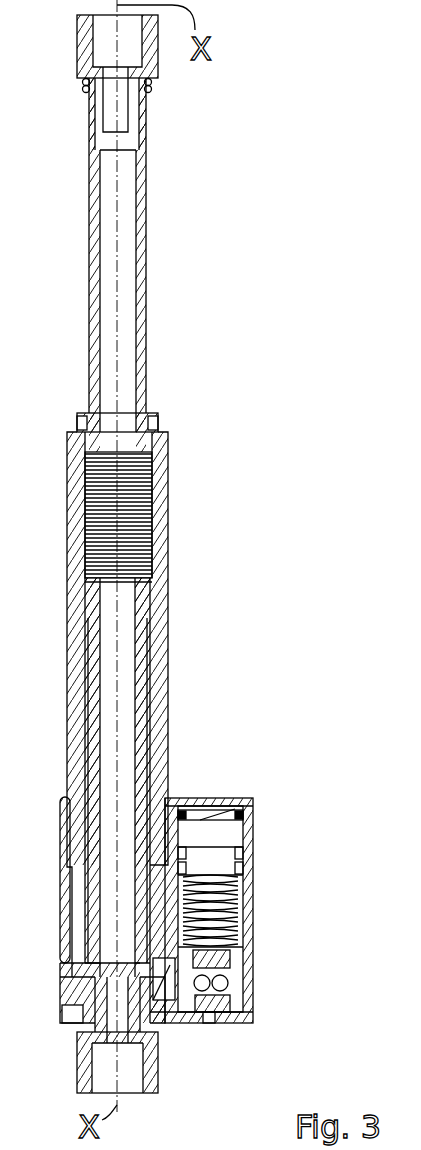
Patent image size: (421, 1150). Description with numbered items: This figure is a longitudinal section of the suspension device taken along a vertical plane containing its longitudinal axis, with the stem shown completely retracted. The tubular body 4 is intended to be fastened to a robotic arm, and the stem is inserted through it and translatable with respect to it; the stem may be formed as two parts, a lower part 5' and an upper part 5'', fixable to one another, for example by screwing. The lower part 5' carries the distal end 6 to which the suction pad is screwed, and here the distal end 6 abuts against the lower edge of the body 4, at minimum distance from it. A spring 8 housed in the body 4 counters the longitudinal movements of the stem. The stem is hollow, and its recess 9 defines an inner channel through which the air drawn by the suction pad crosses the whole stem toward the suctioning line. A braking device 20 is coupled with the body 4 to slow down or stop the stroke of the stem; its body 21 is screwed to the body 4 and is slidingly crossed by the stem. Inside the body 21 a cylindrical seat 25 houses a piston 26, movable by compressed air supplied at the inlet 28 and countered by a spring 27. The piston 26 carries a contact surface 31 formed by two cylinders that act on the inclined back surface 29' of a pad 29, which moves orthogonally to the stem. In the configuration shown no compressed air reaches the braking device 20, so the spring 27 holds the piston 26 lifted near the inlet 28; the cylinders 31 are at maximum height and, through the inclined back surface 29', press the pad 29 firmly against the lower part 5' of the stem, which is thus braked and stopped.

The body 4 is at (168, 455).
The lower part of the stem 5' is at (85, 777).
The upper part of the stem 5'' is at (168, 223).
The distal end 6 is at (82, 1073).
The spring 8 is at (140, 533).
The recess 9 is at (133, 718).
The braking device 20 is at (262, 817).
The body of the braking device 21 is at (65, 948).
The cylindrical seat 25 is at (234, 836).
The piston 26 is at (233, 957).
The spring 27 is at (237, 898).
The inlet 28 is at (210, 790).
The pad 29 is at (193, 1025).
The inclined back surface 29' is at (256, 1055).
The contact surface 31 is at (238, 986).